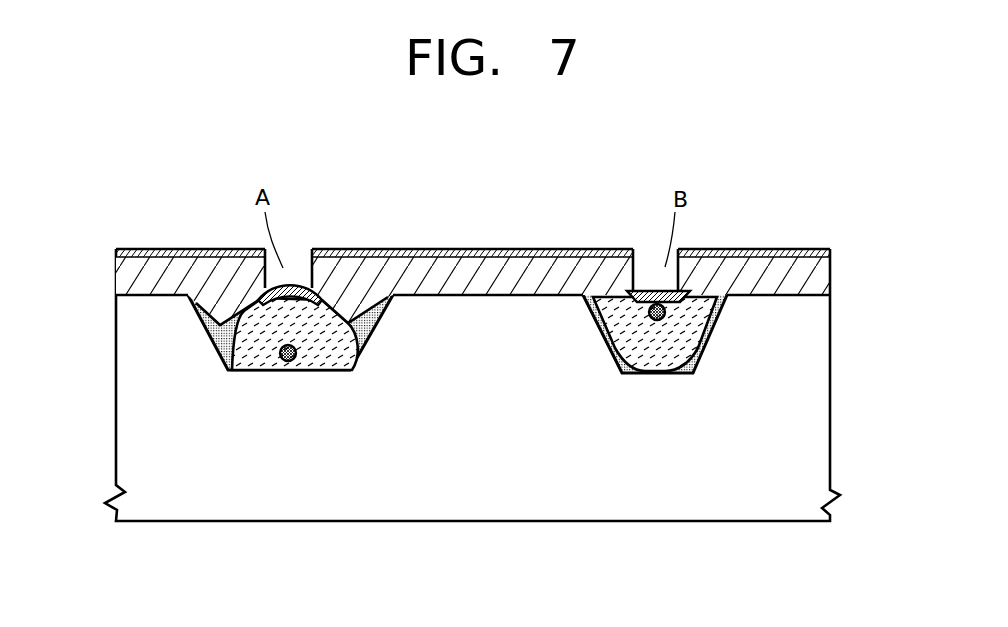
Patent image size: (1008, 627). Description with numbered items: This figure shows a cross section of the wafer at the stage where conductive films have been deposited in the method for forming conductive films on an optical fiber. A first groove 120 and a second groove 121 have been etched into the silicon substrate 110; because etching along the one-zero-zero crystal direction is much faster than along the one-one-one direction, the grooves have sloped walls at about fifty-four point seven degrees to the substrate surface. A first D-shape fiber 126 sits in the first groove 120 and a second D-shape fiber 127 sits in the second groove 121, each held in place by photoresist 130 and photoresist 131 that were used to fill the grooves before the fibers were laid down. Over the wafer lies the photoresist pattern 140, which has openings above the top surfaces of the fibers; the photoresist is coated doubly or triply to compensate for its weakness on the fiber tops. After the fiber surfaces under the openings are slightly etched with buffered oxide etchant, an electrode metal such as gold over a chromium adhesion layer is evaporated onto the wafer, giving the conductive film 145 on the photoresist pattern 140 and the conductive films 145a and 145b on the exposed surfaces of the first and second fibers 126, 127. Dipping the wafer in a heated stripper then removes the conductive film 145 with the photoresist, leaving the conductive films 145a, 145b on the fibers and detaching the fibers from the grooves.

The silicon substrate 110 is at (817, 473).
The first groove 120 is at (212, 322).
The second groove 121 is at (713, 330).
The first D-shape fiber 126 is at (232, 350).
The second D-shape fiber 127 is at (693, 338).
The photoresist 130 is at (219, 429).
The photoresist 131 is at (746, 429).
The photoresist pattern 140 is at (817, 279).
The conductive film 145 is at (830, 255).
The conductive film 145a is at (288, 288).
The conductive film 145b is at (642, 287).